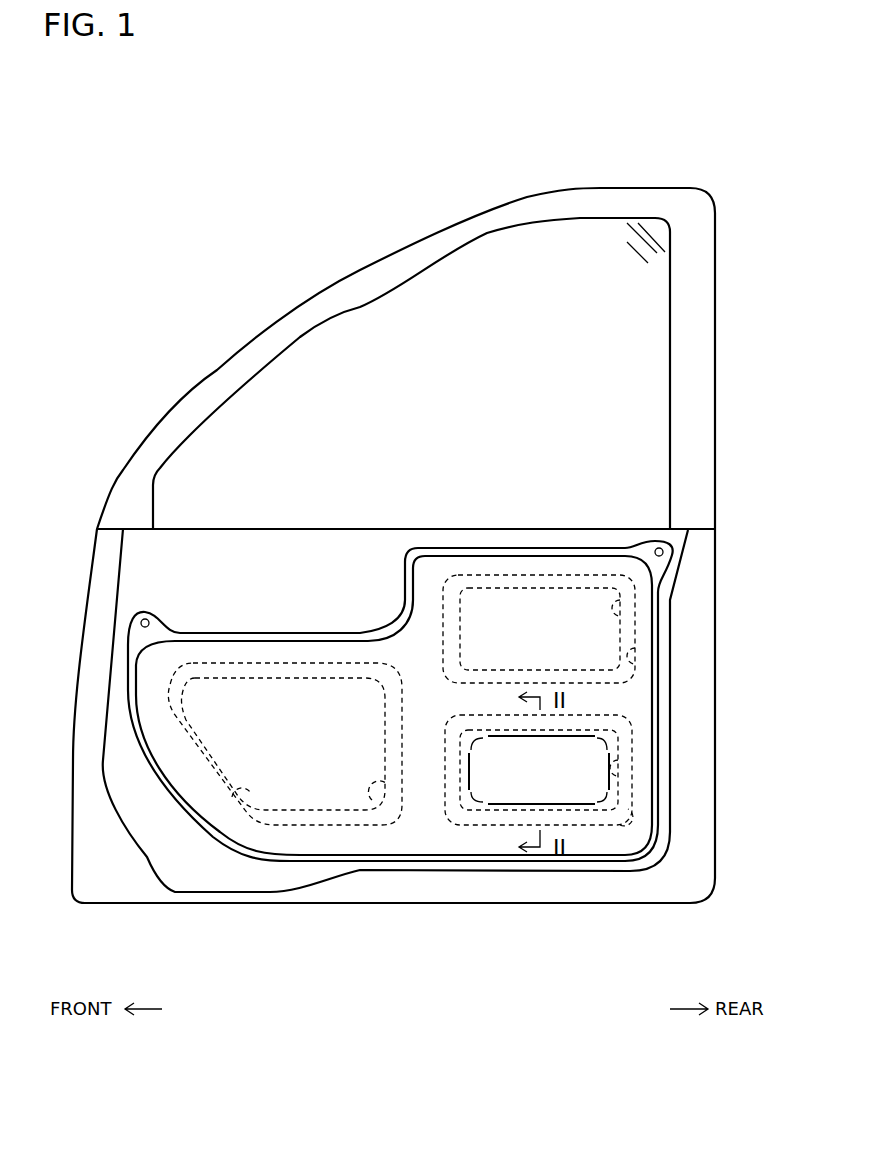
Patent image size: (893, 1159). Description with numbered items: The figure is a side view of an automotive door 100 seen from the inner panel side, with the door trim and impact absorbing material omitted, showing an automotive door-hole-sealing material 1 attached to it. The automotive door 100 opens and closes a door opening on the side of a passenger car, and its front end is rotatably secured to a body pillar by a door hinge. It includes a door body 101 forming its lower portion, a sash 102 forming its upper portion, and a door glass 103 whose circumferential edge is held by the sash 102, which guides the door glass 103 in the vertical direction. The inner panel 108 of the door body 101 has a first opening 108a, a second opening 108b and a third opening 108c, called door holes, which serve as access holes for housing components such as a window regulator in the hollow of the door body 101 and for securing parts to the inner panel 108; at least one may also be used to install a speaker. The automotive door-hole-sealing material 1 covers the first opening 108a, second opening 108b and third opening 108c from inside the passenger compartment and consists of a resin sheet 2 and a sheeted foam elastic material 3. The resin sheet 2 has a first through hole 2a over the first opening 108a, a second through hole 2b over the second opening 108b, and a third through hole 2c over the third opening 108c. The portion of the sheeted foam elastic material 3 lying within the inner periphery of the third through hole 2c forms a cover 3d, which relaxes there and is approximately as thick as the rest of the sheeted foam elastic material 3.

The automotive door 100 is at (213, 270).
The door body 101 is at (100, 590).
The sash 102 is at (430, 247).
The door glass 103 is at (548, 257).
The inner panel 108 is at (216, 547).
The first opening 108a is at (618, 616).
The second opening 108b is at (255, 797).
The third opening 108c is at (618, 776).
The automotive door-hole-sealing material 1 is at (138, 737).
The resin sheet 2 is at (357, 727).
The first through hole 2a is at (635, 668).
The second through hole 2b is at (370, 800).
The third through hole 2c is at (618, 815).
The sheeted foam elastic material 3 is at (213, 837).
The cover 3d is at (587, 750).